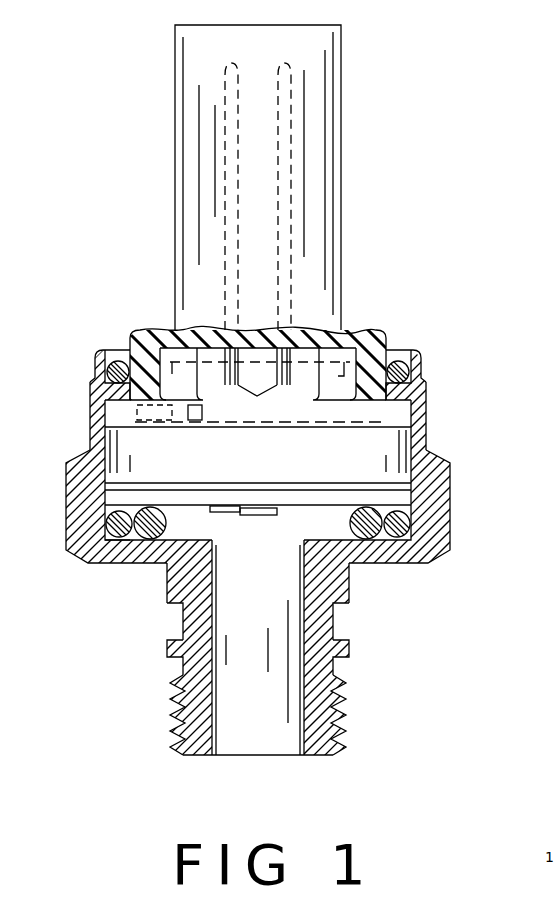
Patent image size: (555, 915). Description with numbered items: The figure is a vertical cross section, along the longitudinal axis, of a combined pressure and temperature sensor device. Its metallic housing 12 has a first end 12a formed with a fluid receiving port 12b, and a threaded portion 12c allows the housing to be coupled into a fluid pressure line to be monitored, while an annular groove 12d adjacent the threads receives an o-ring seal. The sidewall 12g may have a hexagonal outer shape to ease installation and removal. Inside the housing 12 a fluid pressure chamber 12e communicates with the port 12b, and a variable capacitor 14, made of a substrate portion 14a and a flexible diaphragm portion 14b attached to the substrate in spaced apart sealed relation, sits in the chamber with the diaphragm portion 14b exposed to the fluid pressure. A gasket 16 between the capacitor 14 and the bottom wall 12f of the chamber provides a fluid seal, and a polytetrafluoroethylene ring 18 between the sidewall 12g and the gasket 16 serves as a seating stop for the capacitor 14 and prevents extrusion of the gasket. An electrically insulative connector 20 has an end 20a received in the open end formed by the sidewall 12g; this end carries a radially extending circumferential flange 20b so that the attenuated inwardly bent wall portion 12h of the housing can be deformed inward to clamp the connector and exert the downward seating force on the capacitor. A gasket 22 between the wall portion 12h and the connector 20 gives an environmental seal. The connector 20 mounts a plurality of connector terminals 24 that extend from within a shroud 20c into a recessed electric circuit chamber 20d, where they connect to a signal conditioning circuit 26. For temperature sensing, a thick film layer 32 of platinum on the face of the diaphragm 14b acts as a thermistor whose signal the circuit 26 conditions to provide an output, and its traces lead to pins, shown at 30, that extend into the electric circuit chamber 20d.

The housing 12 is at (432, 427).
The first end 12a is at (280, 755).
The fluid receiving port 12b is at (218, 755).
The threaded portion 12c is at (335, 711).
The annular groove 12d is at (335, 626).
The fluid pressure chamber 12e is at (244, 531).
The bottom wall 12f is at (335, 540).
The sidewall 12g is at (432, 483).
The inwardly bent wall portion 12h is at (93, 360).
The variable capacitor 14 is at (262, 448).
The substrate portion 14a is at (187, 467).
The flexible diaphragm portion 14b is at (383, 497).
The gasket 16 is at (132, 541).
The ring 18 is at (403, 525).
The connector 20 is at (350, 199).
The end 20a is at (322, 427).
The radially extending circumferential flange 20b is at (404, 390).
The shroud 20c is at (318, 118).
The recessed electric circuit chamber 20d is at (393, 333).
The gasket 22 is at (107, 361).
The connector terminals 24 is at (257, 382).
The signal conditioning circuit 26 is at (107, 428).
The circuit board 30 is at (135, 408).
The thick film layer 32 is at (258, 515).